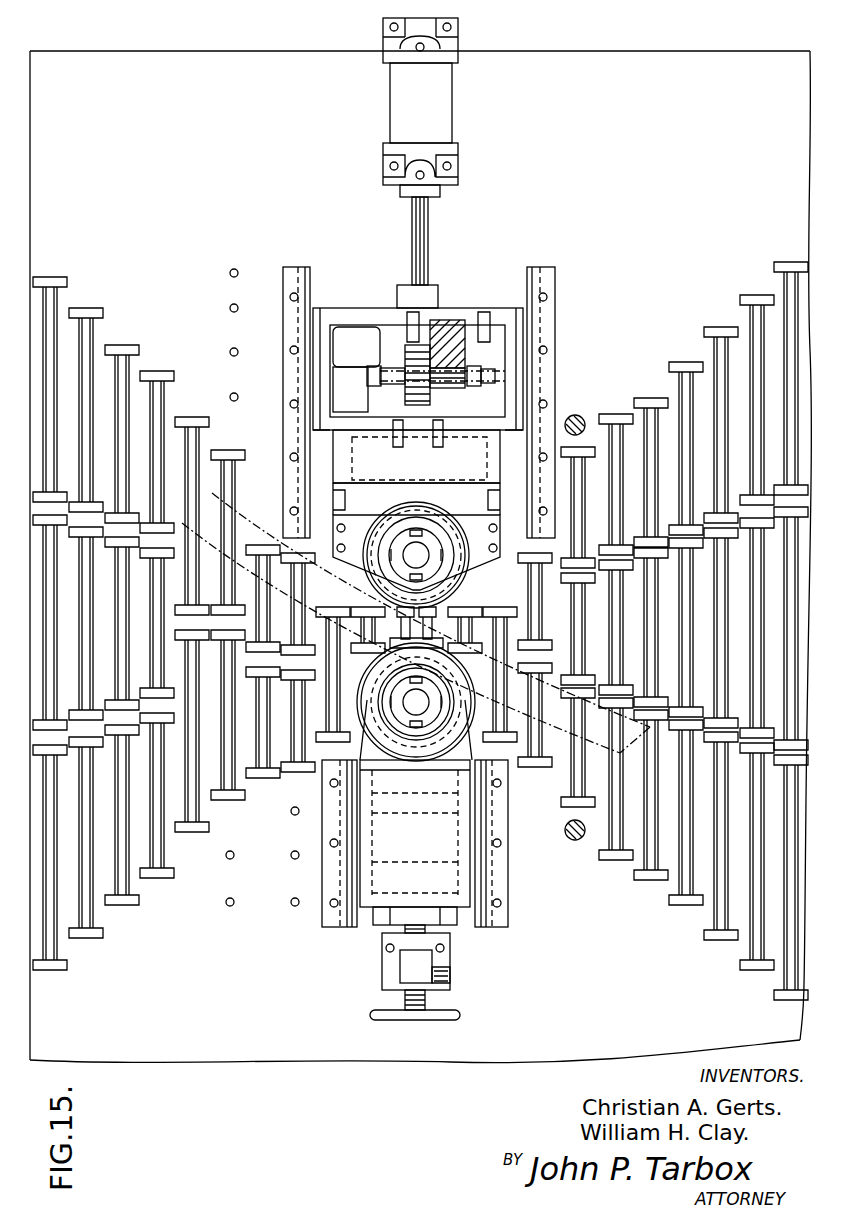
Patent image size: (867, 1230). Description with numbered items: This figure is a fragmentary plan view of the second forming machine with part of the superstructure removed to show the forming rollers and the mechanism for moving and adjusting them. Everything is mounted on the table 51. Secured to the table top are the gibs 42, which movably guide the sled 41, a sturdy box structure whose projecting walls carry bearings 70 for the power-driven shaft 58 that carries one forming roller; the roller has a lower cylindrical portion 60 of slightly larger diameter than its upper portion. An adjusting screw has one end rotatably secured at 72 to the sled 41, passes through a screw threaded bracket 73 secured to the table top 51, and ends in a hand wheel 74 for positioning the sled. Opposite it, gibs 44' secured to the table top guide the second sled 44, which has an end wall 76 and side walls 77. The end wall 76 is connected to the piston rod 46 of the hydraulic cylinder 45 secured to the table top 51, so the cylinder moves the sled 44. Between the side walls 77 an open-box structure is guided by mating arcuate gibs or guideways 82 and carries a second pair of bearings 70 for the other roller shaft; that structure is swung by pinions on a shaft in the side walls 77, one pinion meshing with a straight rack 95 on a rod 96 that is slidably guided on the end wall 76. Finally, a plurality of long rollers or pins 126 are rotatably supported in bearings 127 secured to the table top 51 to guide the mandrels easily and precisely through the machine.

The hydraulic cylinder 45 is at (391, 98).
The piston rod 46 is at (420, 240).
The gibs 44' is at (416, 376).
The sled 44 is at (418, 373).
The end wall 76 is at (372, 315).
The rod 96 is at (458, 330).
The straight rack 95 is at (465, 355).
The side walls 77 is at (325, 335).
The long rollers or pins 126 is at (87, 423).
The bearings 127 is at (193, 420).
The arcuate gibs or guideways 82 is at (333, 500).
The bearings 70 is at (400, 545).
The lower cylindrical portion 60 is at (478, 570).
The power-driven shaft 58 is at (463, 697).
The gibs 42 is at (329, 862).
The sled 41 is at (457, 889).
The rotatable securement of adjusting screw 72 is at (433, 915).
The screw threaded bracket 73 is at (386, 970).
The hand wheel 74 is at (378, 1013).
The table 51 is at (279, 1053).